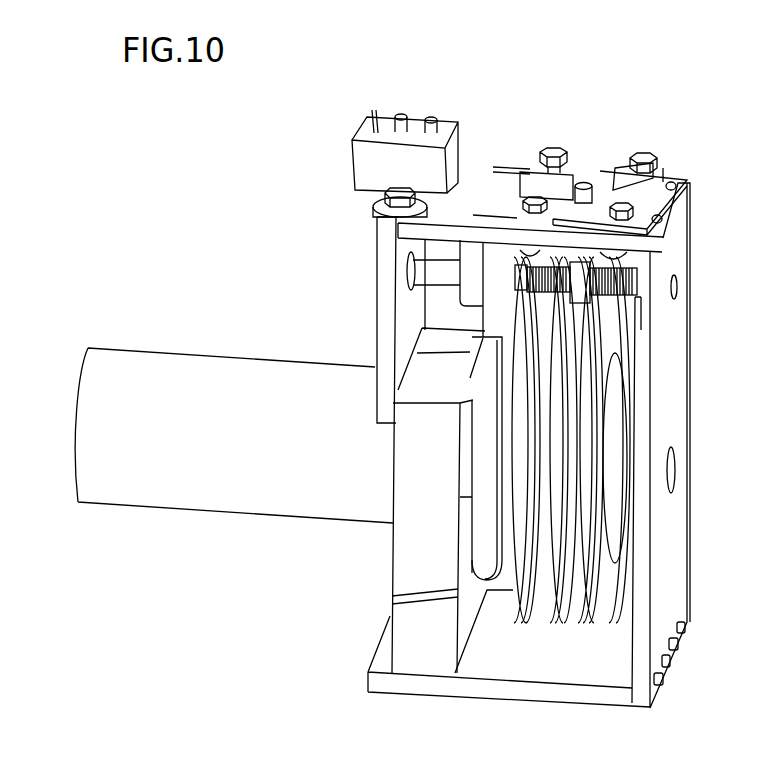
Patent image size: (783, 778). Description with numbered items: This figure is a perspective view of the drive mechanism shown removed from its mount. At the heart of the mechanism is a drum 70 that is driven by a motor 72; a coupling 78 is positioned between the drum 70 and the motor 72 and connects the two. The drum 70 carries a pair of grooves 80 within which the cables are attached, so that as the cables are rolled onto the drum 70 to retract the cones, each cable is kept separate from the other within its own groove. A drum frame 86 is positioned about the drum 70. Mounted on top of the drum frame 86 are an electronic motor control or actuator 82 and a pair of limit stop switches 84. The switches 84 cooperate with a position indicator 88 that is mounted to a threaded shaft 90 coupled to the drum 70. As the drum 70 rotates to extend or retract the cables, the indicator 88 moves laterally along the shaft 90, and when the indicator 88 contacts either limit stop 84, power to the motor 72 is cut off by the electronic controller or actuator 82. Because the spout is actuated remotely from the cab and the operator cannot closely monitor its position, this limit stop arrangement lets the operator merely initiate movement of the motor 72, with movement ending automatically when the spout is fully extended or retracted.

The drum 70 is at (618, 500).
The motor 72 is at (207, 373).
The coupling 78 is at (408, 545).
The grooves 80 is at (575, 422).
The electronic motor control or actuator 82 is at (352, 153).
The limit stop switches 84 is at (547, 187).
The drum frame 86 is at (675, 310).
The position indicator 88 is at (583, 182).
The threaded shaft 90 is at (628, 286).